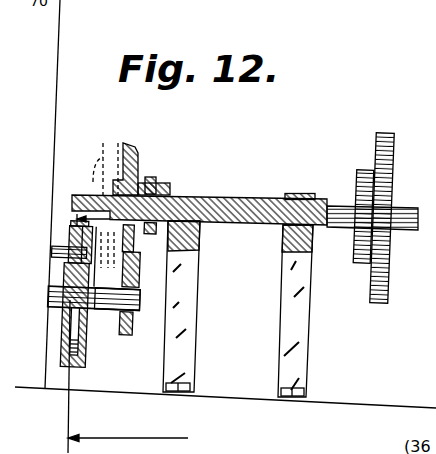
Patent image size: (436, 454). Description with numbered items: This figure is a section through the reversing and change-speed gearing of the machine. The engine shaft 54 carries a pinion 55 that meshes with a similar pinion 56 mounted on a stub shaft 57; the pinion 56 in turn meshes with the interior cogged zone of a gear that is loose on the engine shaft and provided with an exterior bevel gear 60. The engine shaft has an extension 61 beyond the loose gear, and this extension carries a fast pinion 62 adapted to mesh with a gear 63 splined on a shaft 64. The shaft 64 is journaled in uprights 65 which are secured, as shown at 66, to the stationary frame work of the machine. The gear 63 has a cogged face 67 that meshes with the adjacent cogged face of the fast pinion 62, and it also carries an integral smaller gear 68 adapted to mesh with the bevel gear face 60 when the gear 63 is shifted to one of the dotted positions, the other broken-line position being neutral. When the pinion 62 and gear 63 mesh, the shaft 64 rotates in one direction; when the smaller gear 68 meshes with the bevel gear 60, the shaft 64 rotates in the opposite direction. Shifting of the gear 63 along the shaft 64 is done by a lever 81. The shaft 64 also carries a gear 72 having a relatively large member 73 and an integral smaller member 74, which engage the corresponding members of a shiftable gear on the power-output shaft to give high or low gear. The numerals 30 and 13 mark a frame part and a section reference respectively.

The frame plate 30 is at (58, 98).
The shaft 64 is at (80, 194).
The gear 72 is at (376, 202).
The smaller member 74 is at (361, 172).
The larger member 73 is at (384, 153).
The uprights 65 is at (200, 238).
The securing point 66 is at (306, 384).
The fast pinion 62 is at (140, 278).
The lever 81 is at (157, 182).
The cogged face 67 is at (134, 149).
The gear 63 is at (138, 173).
The integral smaller gear 68 is at (115, 178).
The pinion 56 is at (67, 236).
The pinion 55 is at (67, 280).
The stub shaft 57 is at (63, 247).
The engine shaft 54 is at (50, 308).
The exterior bevel gear 60 is at (86, 366).
The extension 61 is at (103, 312).
The dimension 13 is at (200, 230).